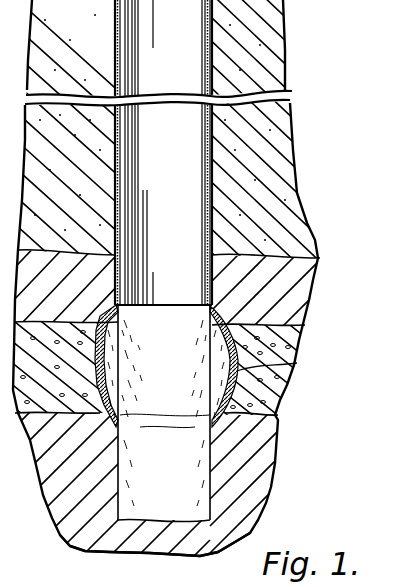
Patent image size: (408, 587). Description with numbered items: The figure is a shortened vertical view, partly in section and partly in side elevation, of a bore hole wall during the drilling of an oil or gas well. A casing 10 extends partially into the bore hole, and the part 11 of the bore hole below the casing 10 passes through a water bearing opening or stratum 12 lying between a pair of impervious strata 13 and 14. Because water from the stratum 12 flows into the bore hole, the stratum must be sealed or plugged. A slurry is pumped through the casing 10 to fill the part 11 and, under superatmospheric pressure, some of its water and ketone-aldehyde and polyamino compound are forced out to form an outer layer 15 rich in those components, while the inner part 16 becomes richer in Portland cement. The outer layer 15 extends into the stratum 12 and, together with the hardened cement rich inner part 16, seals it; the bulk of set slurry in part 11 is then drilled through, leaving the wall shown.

The casing 10 is at (170, 219).
The part of the bore hole below the casing 11 is at (172, 491).
The water bearing opening or stratum 12 is at (287, 346).
The impervious stratum 13 is at (302, 291).
The impervious stratum 14 is at (256, 486).
The outer layer 15 is at (297, 363).
The inner part 16 is at (272, 415).